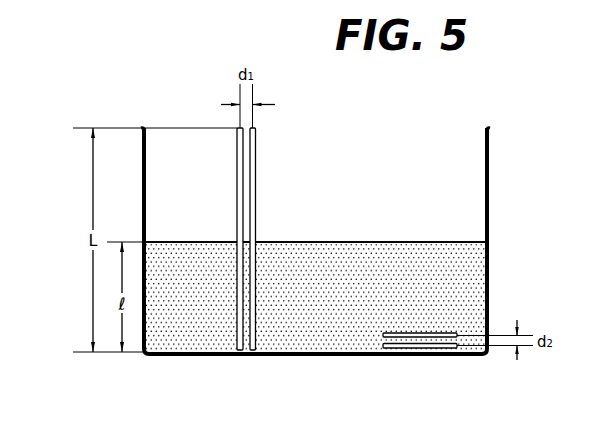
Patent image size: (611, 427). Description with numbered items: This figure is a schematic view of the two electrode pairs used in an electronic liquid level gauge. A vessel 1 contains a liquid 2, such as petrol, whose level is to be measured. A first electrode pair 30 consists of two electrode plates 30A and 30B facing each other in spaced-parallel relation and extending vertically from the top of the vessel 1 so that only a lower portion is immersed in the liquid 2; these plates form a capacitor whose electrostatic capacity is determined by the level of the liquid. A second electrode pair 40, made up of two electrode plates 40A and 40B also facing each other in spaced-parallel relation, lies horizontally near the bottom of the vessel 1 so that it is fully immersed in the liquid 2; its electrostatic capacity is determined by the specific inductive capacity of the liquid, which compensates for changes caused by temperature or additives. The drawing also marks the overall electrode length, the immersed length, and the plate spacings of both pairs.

The vessel 1 is at (489, 156).
The liquid 2 is at (363, 255).
The first electrode pair 30 is at (259, 226).
The electrode plate 30A is at (257, 181).
The electrode plate 30B is at (236, 193).
The second electrode pair 40 is at (436, 341).
The electrode plate 40A is at (438, 332).
The electrode plate 40B is at (422, 348).